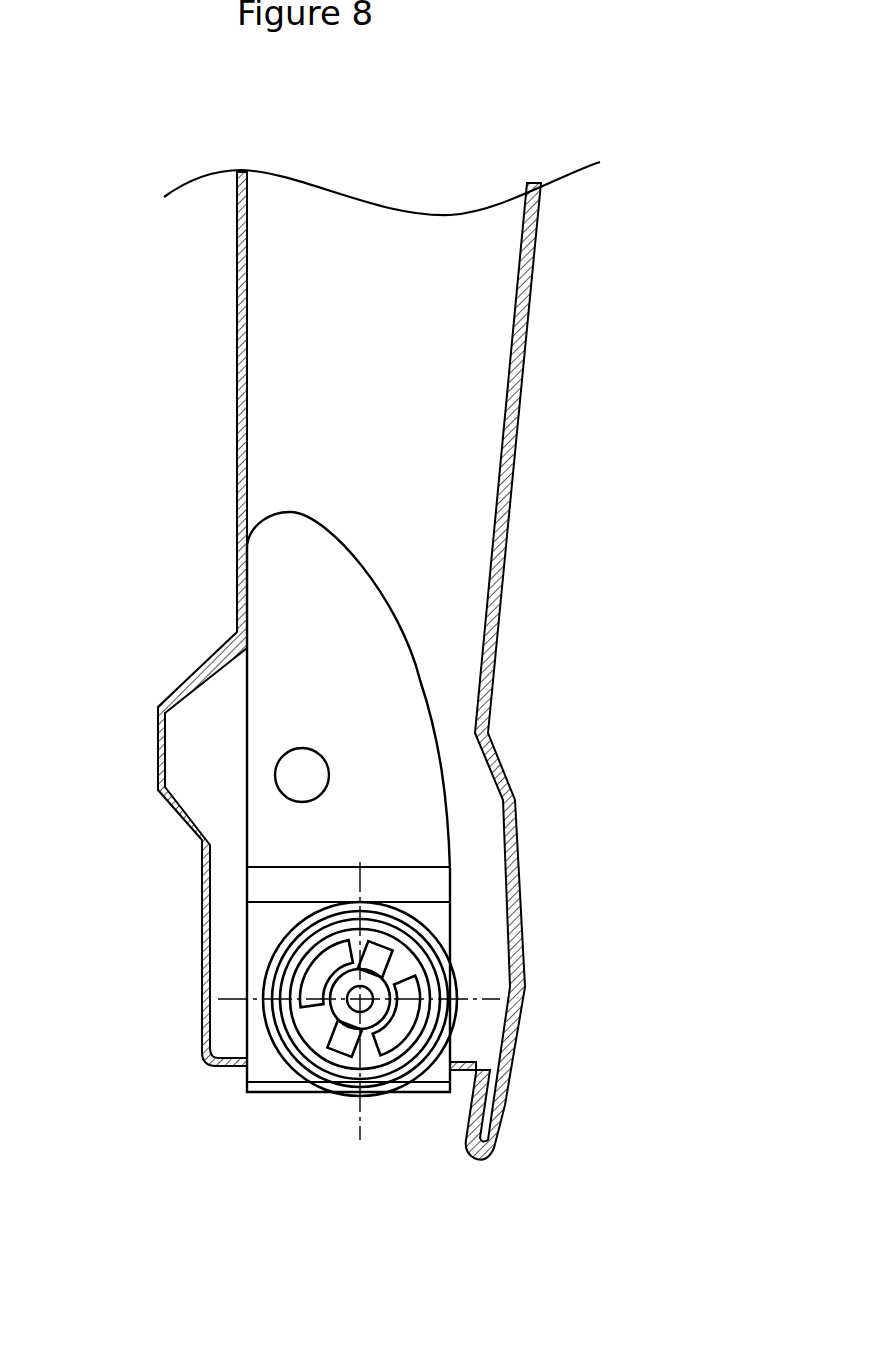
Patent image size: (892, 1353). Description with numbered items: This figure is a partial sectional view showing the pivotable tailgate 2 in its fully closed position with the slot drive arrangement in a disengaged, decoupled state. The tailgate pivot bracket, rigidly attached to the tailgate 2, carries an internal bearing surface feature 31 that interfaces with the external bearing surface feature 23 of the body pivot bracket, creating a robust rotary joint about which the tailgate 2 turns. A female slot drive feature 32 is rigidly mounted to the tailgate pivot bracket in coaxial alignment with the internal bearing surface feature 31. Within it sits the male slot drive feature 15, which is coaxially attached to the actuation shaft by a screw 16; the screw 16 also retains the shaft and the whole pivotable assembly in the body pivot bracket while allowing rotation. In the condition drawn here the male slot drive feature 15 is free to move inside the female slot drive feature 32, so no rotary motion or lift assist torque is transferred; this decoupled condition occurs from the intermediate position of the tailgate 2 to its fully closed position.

The tailgate 2 is at (527, 460).
The male slot drive feature 15 is at (341, 1034).
The screw 16 is at (320, 1022).
The external bearing surface feature 23 is at (398, 1050).
The internal bearing surface feature 31 is at (278, 950).
The female slot drive feature 32 is at (403, 1028).